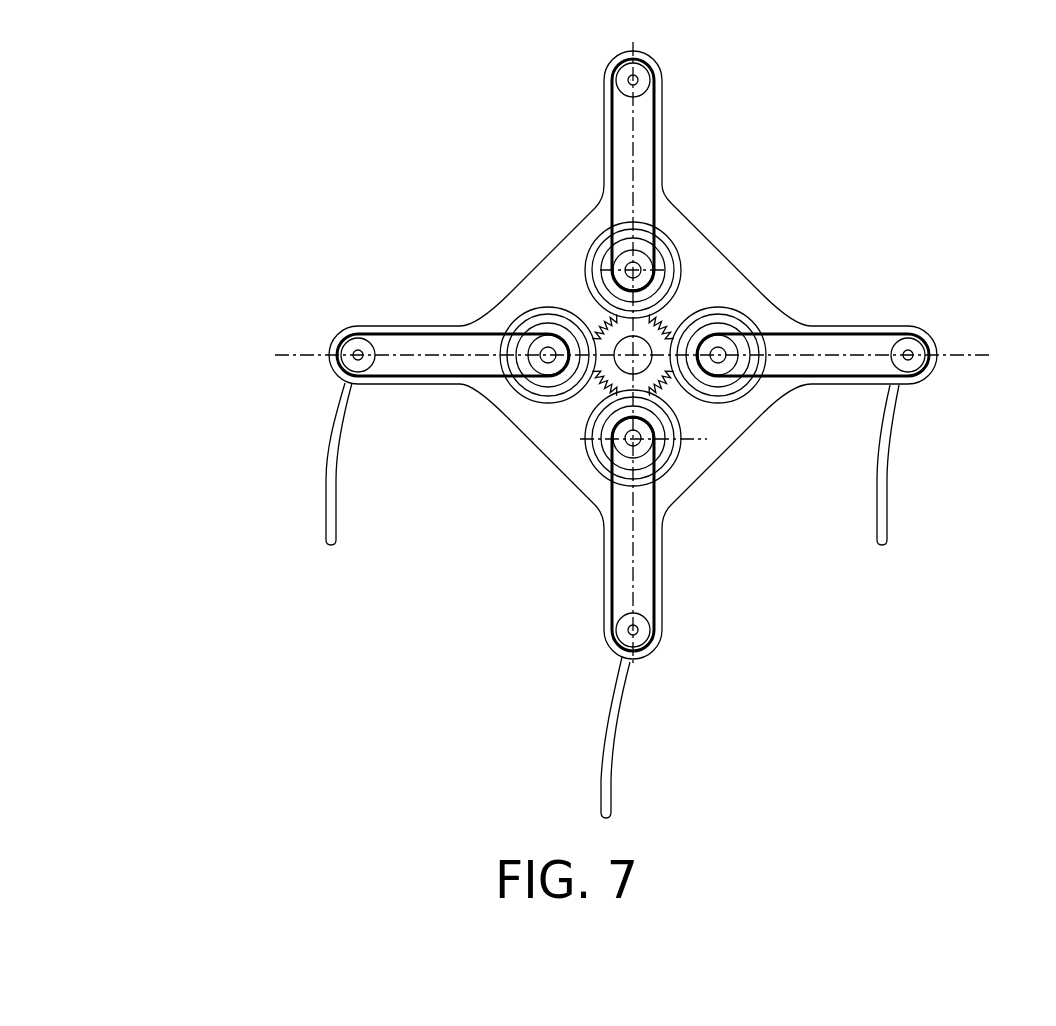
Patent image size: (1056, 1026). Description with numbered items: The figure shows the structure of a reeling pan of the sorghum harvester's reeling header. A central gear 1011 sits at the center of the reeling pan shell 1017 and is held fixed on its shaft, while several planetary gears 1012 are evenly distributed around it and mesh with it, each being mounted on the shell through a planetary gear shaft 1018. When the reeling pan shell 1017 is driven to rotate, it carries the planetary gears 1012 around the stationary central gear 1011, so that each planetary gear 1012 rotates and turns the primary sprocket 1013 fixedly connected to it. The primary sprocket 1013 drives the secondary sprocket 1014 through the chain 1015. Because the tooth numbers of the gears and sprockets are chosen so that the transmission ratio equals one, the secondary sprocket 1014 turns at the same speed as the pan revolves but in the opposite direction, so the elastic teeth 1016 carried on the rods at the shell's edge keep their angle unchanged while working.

The central gear 1011 is at (730, 232).
The planetary gear 1012 is at (851, 237).
The primary sprocket 1013 is at (513, 237).
The secondary sprocket 1014 is at (390, 232).
The chain 1015 is at (731, 577).
The elastic teeth 1016 is at (196, 314).
The reeling pan shell 1017 is at (563, 451).
The planetary gear shaft 1018 is at (808, 559).